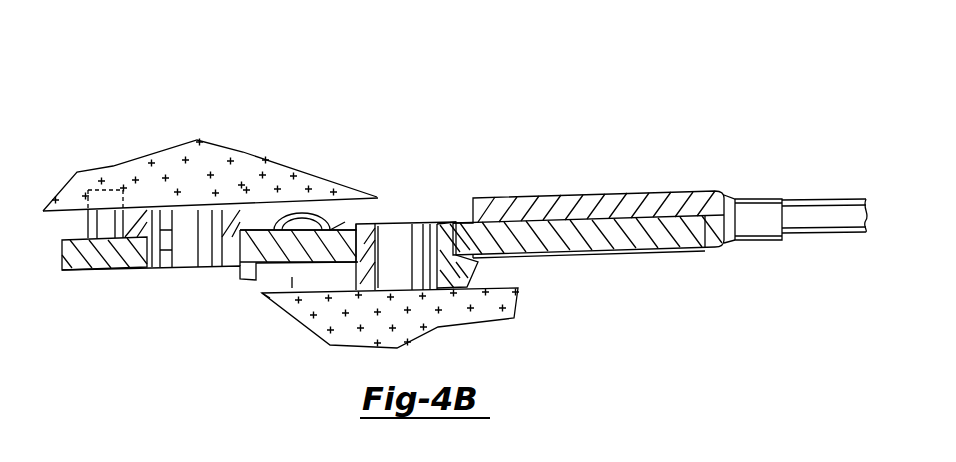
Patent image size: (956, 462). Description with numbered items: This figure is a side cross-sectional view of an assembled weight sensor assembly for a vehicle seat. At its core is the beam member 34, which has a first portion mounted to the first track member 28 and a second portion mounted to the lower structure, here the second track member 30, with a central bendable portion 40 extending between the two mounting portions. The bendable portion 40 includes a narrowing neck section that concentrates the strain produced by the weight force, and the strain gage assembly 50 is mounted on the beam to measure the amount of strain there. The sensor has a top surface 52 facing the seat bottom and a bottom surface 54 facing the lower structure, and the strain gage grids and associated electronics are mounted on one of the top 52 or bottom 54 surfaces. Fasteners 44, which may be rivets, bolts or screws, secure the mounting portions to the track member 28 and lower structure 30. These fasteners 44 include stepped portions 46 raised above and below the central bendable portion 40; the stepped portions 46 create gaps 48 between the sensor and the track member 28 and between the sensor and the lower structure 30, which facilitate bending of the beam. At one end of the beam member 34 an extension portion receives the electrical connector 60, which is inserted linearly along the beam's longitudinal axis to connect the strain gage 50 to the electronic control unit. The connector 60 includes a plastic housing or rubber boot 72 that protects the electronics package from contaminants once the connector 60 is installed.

The first track member 28 is at (344, 222).
The second track member 30 is at (492, 289).
The beam member 34 is at (83, 255).
The central bendable portion 40 is at (307, 250).
The fasteners 44 is at (158, 237).
The stepped portions 46 is at (252, 210).
The gaps 48 is at (347, 222).
The strain gage assembly 50 is at (301, 214).
The top surface 52 is at (347, 234).
The bottom surface 54 is at (257, 263).
The electrical connector 60 is at (752, 176).
The plastic housing or rubber boot 72 is at (617, 196).